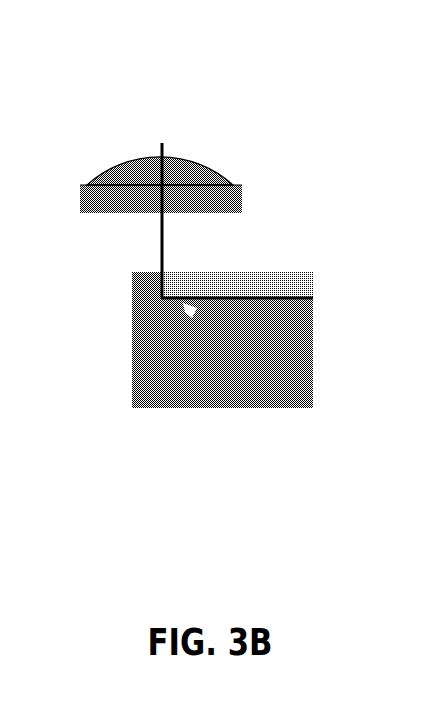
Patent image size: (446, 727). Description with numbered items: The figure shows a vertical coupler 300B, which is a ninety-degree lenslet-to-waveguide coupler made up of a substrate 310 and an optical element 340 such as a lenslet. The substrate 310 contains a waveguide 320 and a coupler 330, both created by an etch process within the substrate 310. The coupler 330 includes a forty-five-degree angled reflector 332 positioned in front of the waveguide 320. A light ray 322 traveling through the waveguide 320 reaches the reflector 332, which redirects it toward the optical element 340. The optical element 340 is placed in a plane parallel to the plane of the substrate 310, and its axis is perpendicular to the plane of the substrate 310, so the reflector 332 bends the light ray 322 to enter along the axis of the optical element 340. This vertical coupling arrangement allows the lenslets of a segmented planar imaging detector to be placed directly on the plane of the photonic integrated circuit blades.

The vertical coupler 300B is at (198, 249).
The substrate 310 is at (285, 398).
The waveguide 320 is at (315, 300).
The light ray 322 is at (273, 292).
The coupler 330 is at (264, 261).
The 45-degree angled reflector 332 is at (146, 287).
The optical element 340 is at (209, 162).